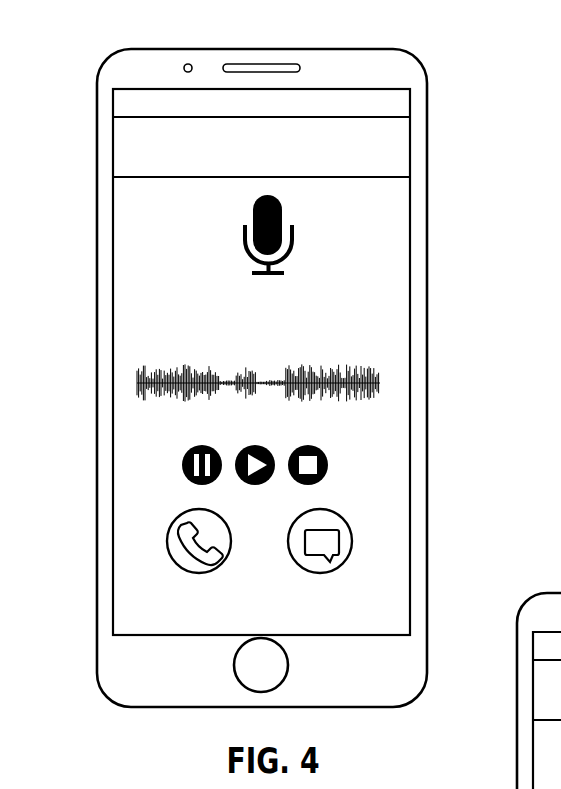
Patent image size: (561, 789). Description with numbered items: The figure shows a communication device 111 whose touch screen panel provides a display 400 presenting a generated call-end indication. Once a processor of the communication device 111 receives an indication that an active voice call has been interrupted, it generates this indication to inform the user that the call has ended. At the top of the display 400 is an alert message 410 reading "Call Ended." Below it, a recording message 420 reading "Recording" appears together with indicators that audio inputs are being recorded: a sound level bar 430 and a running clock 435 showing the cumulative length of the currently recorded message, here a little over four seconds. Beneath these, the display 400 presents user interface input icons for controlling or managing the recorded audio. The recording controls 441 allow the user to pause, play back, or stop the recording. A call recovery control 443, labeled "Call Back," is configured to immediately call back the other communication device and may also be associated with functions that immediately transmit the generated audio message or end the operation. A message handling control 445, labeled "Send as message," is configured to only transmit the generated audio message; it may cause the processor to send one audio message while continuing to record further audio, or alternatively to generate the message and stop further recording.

The communication device 111 is at (148, 49).
The display 400 is at (113, 89).
The alert message 410 is at (398, 140).
The recording message 420 is at (352, 295).
The sound level bar 430 is at (160, 270).
The running clock 435 is at (210, 420).
The recording controls 441 is at (352, 452).
The call recovery control 443 is at (172, 523).
The message handling control 445 is at (353, 535).